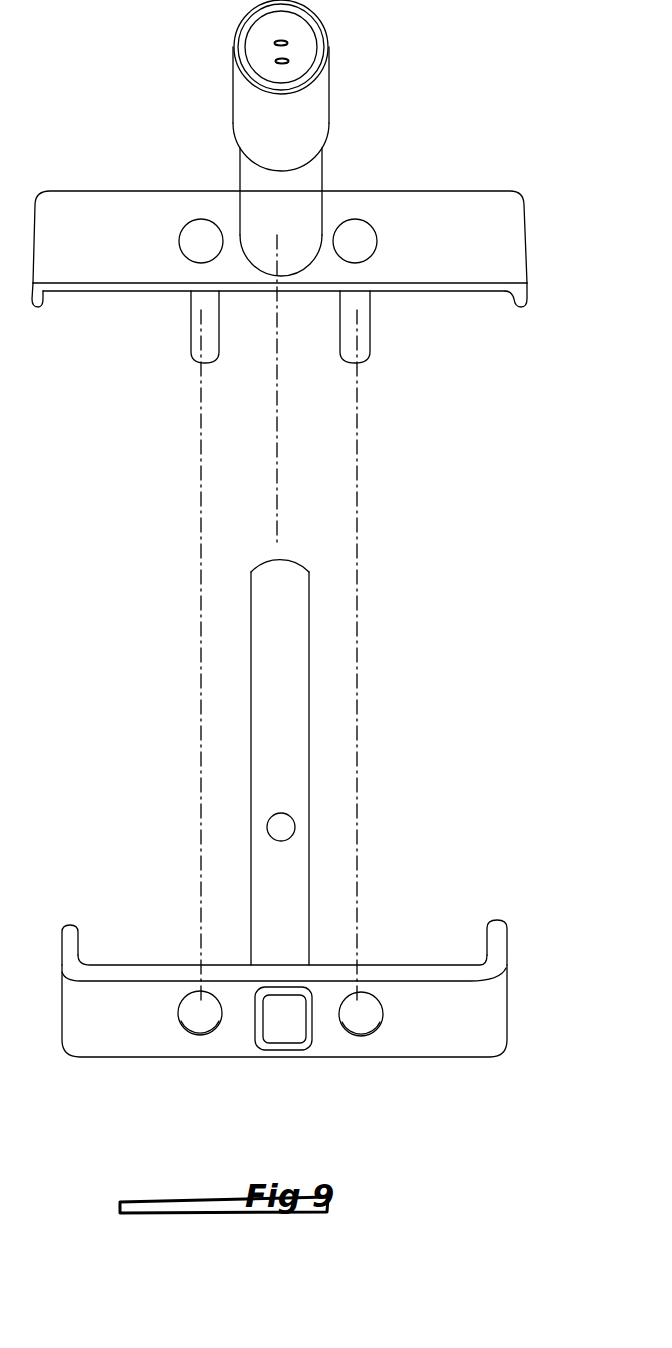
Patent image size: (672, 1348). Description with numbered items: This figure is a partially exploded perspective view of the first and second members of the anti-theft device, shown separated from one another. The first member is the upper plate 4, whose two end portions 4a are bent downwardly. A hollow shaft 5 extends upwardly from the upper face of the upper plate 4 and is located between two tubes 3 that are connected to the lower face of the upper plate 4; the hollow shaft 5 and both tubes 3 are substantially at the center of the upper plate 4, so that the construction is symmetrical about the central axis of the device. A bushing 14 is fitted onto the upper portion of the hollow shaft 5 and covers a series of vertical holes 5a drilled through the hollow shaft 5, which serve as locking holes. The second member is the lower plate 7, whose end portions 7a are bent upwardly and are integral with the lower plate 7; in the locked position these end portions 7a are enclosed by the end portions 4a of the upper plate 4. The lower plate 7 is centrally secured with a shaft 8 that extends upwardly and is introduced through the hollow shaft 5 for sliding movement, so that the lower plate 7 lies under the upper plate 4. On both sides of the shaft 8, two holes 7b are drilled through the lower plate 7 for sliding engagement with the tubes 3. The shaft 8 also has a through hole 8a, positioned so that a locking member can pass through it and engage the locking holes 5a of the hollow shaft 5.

The tubes 3 is at (199, 353).
The upper plate 4 is at (437, 208).
The end portions of the upper plate 4a is at (37, 308).
The hollow shaft 5 is at (302, 193).
The vertical holes 5a is at (288, 39).
The lower plate 7 is at (422, 968).
The end portions of the lower plate 7a is at (68, 947).
The holes 7b is at (200, 1033).
The shaft 8 is at (290, 742).
The through hole 8a is at (295, 828).
The bushing 14 is at (316, 118).